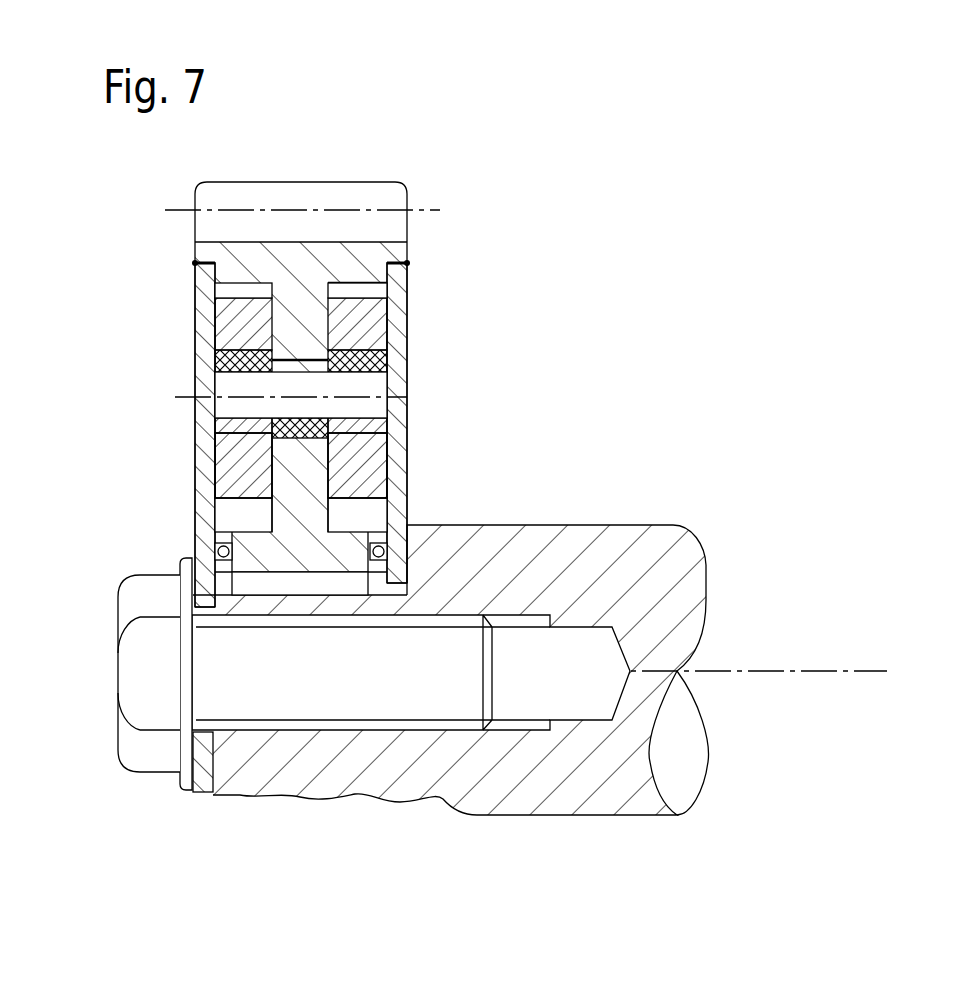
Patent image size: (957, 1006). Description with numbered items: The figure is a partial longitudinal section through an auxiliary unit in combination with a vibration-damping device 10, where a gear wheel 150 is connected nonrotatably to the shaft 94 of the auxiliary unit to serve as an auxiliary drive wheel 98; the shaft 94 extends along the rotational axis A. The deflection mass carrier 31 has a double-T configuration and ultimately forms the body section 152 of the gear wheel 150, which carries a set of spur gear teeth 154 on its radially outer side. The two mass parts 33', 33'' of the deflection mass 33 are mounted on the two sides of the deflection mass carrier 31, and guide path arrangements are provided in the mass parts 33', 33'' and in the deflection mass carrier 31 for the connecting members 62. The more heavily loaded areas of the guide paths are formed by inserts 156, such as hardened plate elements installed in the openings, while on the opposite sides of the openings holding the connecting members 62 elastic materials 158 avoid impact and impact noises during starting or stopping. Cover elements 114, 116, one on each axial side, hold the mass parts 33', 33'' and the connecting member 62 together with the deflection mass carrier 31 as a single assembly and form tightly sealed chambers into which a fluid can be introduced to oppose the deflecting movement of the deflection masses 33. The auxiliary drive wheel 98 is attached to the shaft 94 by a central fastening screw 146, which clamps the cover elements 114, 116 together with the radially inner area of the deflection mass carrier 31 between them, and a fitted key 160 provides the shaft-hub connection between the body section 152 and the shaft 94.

The spur gear teeth 154 is at (301, 182).
The gear wheel 150 is at (449, 160).
The body section 152 is at (357, 258).
The auxiliary drive wheel 98 is at (148, 255).
The deflection mass carrier 31 is at (390, 279).
The inserts 156 is at (345, 330).
The elastic materials 158 is at (230, 357).
The vibration-damping device 10 is at (140, 353).
The cover element 114 is at (407, 381).
The connecting member 62 is at (365, 407).
The cover element 116 is at (225, 423).
The mass part 33' is at (180, 465).
The mass part 33'' is at (404, 465).
The deflection mass 33 is at (365, 465).
The shaft 94 is at (578, 524).
The central fastening screw 146 is at (132, 682).
The fitted key 160 is at (305, 580).
The axis A is at (823, 670).